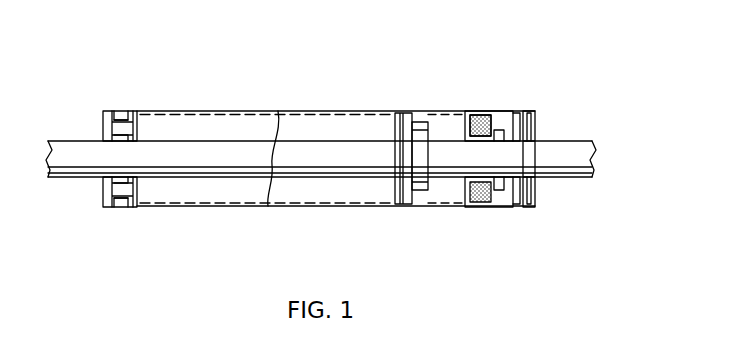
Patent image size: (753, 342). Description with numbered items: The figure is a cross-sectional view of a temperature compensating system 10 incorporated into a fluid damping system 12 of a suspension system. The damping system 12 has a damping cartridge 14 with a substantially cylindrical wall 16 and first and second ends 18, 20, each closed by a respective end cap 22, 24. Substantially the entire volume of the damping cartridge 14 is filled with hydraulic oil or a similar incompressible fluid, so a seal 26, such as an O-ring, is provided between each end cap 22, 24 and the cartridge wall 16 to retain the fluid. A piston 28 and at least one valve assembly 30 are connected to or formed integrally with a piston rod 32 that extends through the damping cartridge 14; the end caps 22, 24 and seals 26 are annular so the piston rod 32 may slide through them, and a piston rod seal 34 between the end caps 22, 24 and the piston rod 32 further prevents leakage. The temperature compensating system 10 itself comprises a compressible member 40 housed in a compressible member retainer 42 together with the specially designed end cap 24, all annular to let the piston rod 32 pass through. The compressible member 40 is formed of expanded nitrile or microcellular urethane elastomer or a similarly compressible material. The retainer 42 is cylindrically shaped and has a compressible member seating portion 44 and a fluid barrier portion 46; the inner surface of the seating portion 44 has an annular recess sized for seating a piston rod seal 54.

The temperature compensating system 10 is at (549, 74).
The damping system 12 is at (328, 101).
The damping cartridge 14 is at (275, 107).
The cylindrical wall 16 is at (152, 111).
The first end 18 is at (106, 131).
The second end 20 is at (543, 110).
The end cap 22 is at (138, 194).
The end cap 24 is at (536, 116).
The seal 26 is at (124, 208).
The piston 28 is at (403, 113).
The valve assembly 30 is at (432, 127).
The piston rod 32 is at (594, 141).
The piston rod seal 34 is at (112, 181).
The compressible member 40 is at (505, 112).
The compressible member retainer 42 is at (469, 118).
The compressible member seating portion 44 is at (480, 196).
The fluid barrier portion 46 is at (481, 118).
The piston rod seal 54 is at (500, 200).